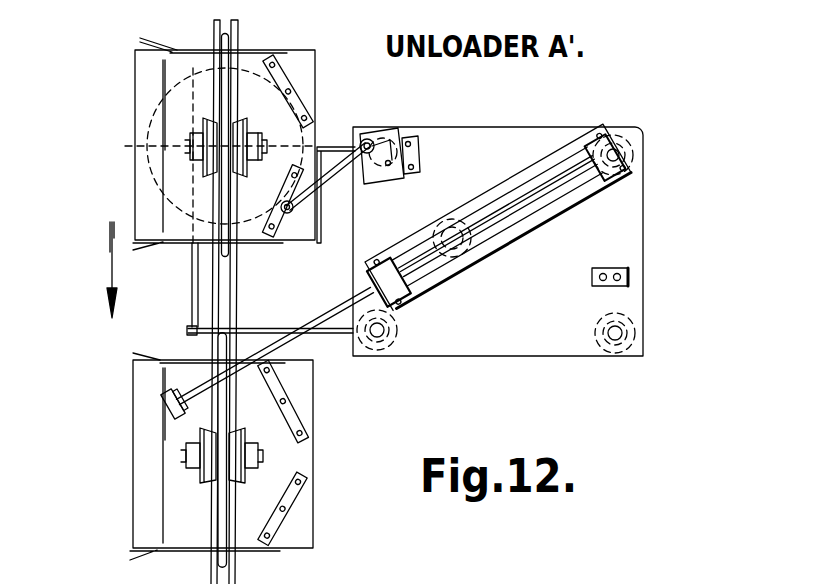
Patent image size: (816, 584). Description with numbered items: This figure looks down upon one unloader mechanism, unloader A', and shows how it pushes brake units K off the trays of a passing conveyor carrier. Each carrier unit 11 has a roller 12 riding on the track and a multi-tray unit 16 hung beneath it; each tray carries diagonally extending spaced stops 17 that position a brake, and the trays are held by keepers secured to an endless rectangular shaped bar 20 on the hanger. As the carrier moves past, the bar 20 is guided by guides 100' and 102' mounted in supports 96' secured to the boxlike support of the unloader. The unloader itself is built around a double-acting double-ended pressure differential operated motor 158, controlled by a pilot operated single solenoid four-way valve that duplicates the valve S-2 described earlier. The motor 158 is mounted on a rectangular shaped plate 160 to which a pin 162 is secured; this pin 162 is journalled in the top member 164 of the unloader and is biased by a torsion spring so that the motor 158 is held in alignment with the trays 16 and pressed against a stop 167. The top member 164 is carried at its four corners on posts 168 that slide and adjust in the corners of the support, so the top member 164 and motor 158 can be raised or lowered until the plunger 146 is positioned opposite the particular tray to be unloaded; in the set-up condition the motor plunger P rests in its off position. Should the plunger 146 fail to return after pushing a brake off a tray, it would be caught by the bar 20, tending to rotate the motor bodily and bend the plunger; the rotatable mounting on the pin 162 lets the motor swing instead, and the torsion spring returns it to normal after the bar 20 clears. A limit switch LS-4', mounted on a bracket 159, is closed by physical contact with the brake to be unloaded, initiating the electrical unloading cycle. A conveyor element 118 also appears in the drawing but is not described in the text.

The carrier unit 11 is at (133, 125).
The roller 12 is at (198, 123).
The multi-tray unit 16 is at (142, 68).
The stops 17 is at (285, 77).
The bar 20 is at (228, 57).
The brake units K is at (140, 147).
The supports 96' is at (253, 212).
The guide 100' is at (180, 302).
The guide 102' is at (269, 302).
The limit switch LS-4' is at (419, 127).
The bracket 159 is at (418, 150).
The pressure differential operated motor 158 is at (529, 190).
The plate 160 is at (480, 253).
The pin 162 is at (507, 235).
The top member 164 is at (507, 345).
The stop 167 is at (622, 284).
The posts 168 is at (633, 158).
The plunger 146 is at (285, 355).
The motor plunger P is at (162, 398).
The control valve S-2 is at (485, 583).
The conveyor element 118 is at (393, 577).